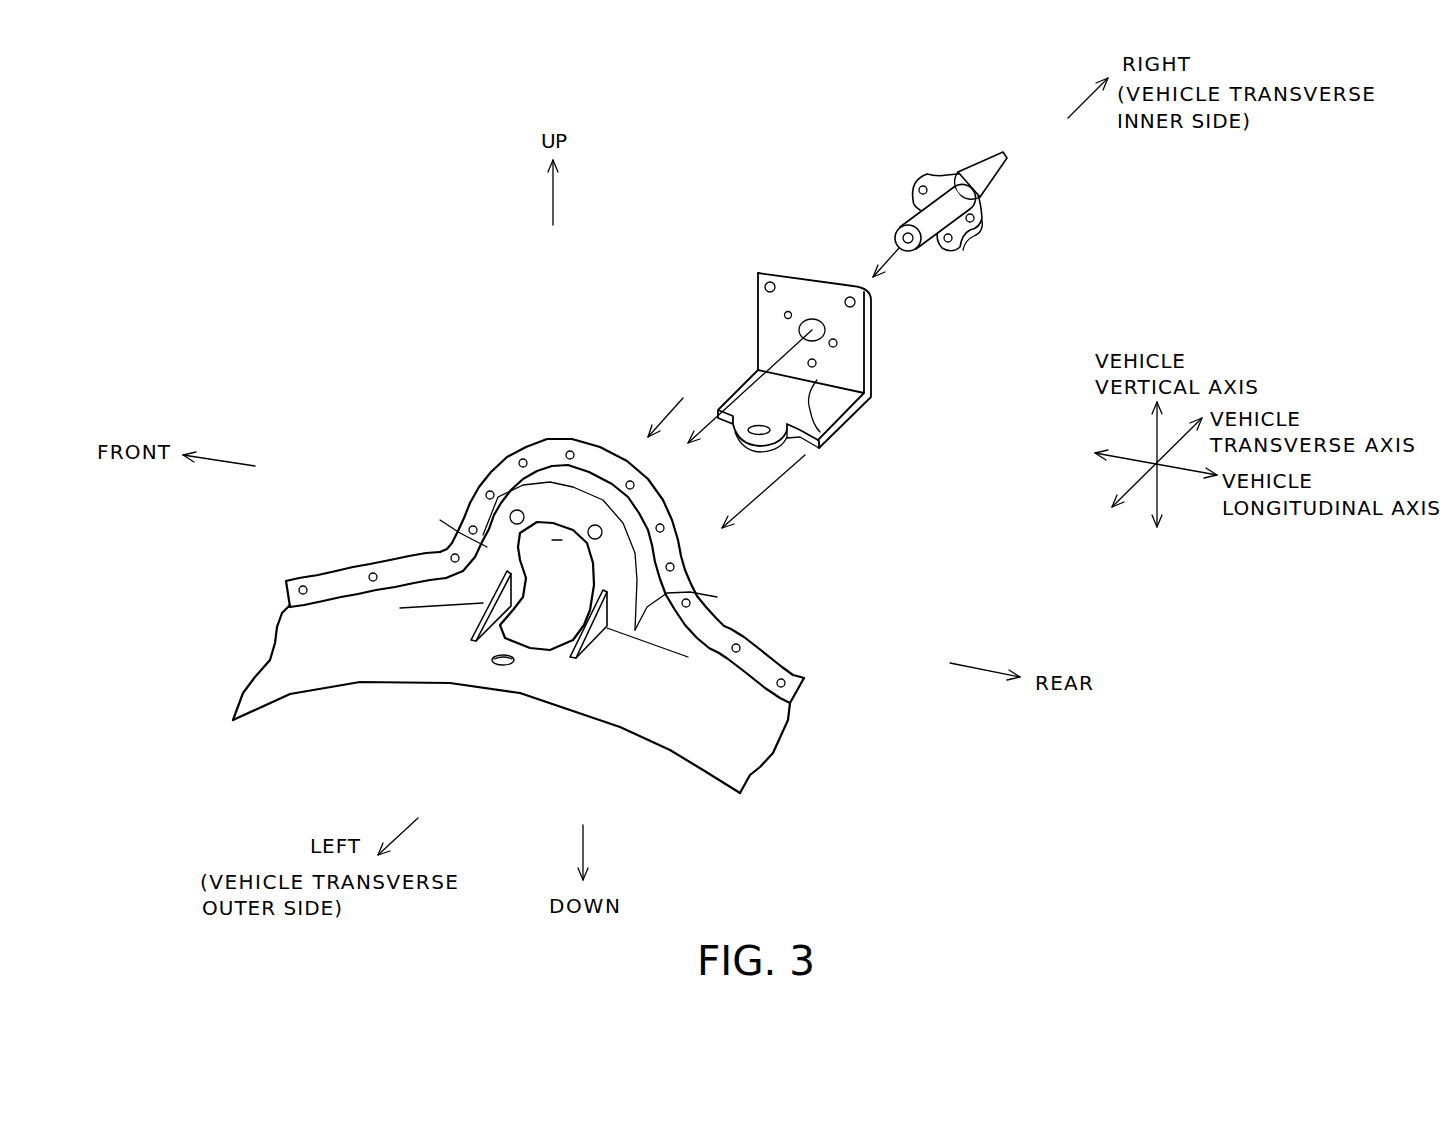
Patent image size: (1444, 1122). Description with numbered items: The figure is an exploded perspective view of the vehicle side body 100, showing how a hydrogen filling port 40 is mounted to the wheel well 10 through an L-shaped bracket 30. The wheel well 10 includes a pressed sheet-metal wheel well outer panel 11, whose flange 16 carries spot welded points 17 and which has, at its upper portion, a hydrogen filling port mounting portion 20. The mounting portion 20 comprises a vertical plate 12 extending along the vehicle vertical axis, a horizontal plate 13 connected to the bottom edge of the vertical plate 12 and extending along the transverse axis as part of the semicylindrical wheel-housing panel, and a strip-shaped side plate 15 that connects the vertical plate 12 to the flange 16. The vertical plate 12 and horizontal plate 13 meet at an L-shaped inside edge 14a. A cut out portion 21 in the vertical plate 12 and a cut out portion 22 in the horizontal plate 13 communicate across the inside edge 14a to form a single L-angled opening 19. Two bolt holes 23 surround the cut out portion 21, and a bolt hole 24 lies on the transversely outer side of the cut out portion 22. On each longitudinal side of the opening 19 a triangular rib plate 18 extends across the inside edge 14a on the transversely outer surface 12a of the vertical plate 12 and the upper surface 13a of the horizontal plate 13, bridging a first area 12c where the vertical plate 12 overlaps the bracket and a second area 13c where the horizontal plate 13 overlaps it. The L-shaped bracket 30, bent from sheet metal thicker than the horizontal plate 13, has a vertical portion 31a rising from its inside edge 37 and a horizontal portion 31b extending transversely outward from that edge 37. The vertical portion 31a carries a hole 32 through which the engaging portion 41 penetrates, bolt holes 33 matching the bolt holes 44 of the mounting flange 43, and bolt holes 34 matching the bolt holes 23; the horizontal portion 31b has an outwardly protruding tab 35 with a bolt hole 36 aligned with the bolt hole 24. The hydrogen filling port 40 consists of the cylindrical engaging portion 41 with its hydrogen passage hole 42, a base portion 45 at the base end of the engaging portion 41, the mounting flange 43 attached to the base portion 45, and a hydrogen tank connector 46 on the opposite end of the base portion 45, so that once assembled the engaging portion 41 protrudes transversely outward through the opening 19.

The vehicle rear structure 100 is at (340, 181).
The wheel well 10 is at (576, 653).
The wheel well outer panel 11 is at (543, 759).
The vertical plate 12 is at (539, 555).
The transversely outer surface 12a is at (570, 563).
The first area 12c is at (613, 563).
The horizontal plate 13 is at (463, 699).
The upper surface 13a is at (523, 726).
The second area 13c is at (595, 690).
The inside edge 14a is at (660, 569).
The side plate 15 is at (560, 477).
The flange 16 is at (339, 533).
The spot welded points 17 is at (368, 543).
The rib plate 18 is at (662, 698).
The opening 19 is at (515, 443).
The hydrogen filling port mounting portion 20 is at (603, 398).
The cut out portion 21 is at (515, 457).
The cut out portion 22 is at (516, 691).
The bolt holes 23 is at (418, 458).
The bolt hole 24 is at (431, 708).
The L-shaped bracket 30 is at (891, 360).
The vertical portion 31a is at (911, 366).
The horizontal portion 31b is at (857, 421).
The hole 32 is at (805, 256).
The bolt holes 33 is at (725, 291).
The bolt holes 34 is at (743, 224).
The tab 35 is at (793, 495).
The bolt hole 36 is at (804, 479).
The inside edge 37 is at (858, 474).
The hydrogen filling port 40 is at (1046, 266).
The engaging portion 41 is at (895, 176).
The hole 42 is at (963, 277).
The mounting flange 43 is at (948, 155).
The bolt holes 44 is at (892, 125).
The base portion 45 is at (978, 129).
The hydrogen tank connector 46 is at (997, 135).